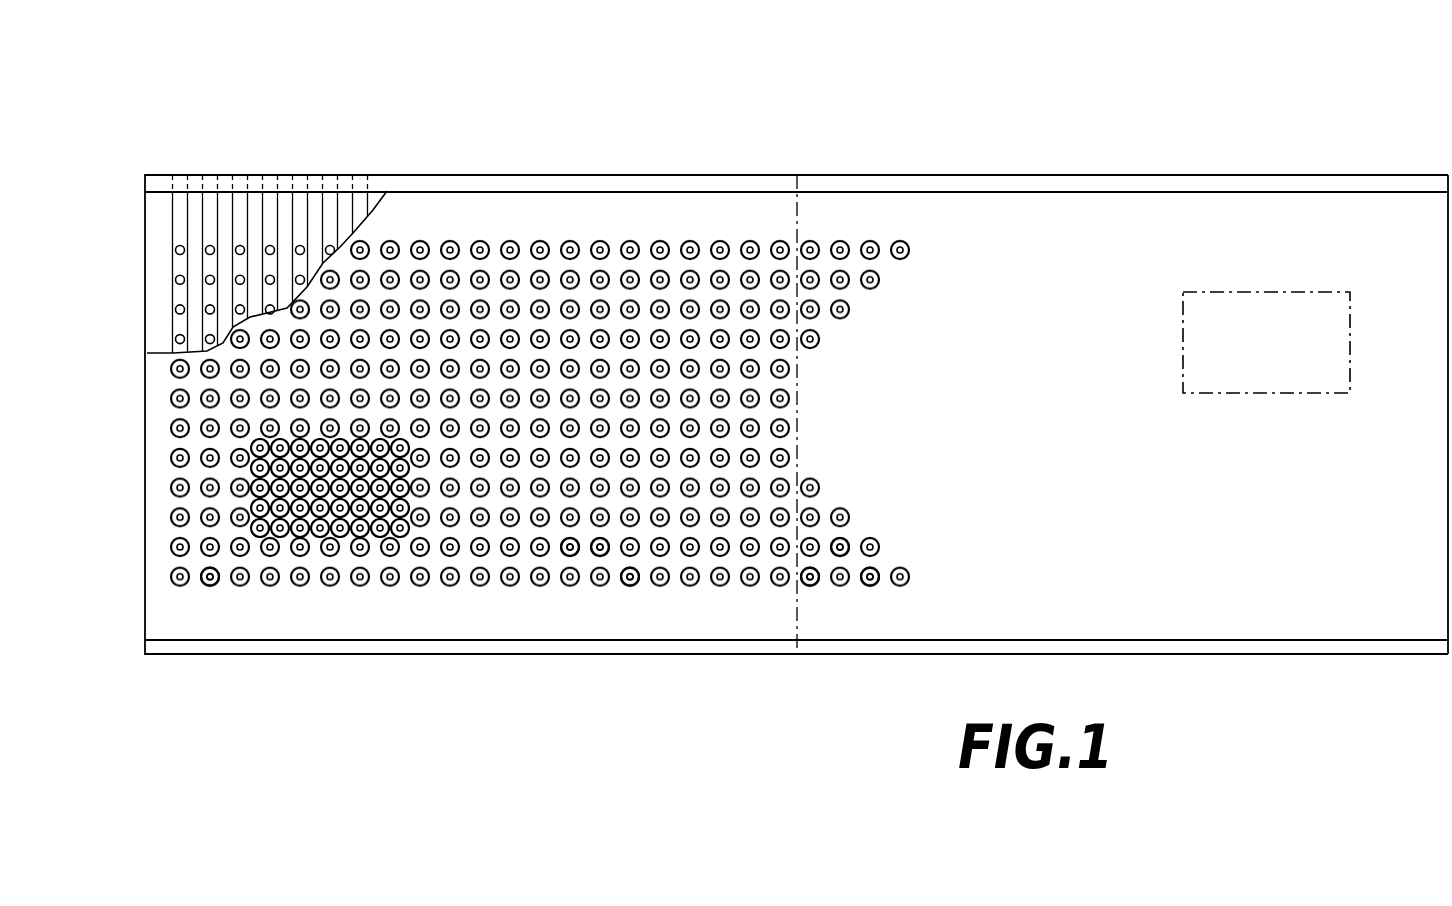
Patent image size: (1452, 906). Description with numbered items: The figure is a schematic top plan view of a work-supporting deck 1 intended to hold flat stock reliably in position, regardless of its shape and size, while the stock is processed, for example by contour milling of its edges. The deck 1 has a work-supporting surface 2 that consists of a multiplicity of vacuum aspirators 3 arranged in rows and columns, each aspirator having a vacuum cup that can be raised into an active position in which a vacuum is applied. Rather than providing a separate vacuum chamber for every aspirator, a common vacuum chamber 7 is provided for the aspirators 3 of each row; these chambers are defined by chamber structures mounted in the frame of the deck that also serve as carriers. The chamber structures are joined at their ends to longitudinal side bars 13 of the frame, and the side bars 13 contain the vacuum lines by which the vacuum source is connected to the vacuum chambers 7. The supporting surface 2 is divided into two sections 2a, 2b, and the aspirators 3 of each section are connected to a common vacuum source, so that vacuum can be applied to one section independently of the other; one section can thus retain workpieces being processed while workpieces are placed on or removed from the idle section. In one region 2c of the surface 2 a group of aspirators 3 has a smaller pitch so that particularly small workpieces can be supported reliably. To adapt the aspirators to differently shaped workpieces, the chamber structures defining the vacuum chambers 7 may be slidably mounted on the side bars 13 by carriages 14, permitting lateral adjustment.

The work-supporting deck 1 is at (866, 146).
The work-supporting surface 2 is at (503, 218).
The section 2a is at (641, 215).
The section 2b is at (1090, 230).
The region 2c is at (1272, 280).
The vacuum aspirator 3 is at (294, 515).
The vacuum chamber 7 is at (272, 230).
The longitudinal side bar 13 is at (433, 183).
The carriage 14 is at (315, 176).